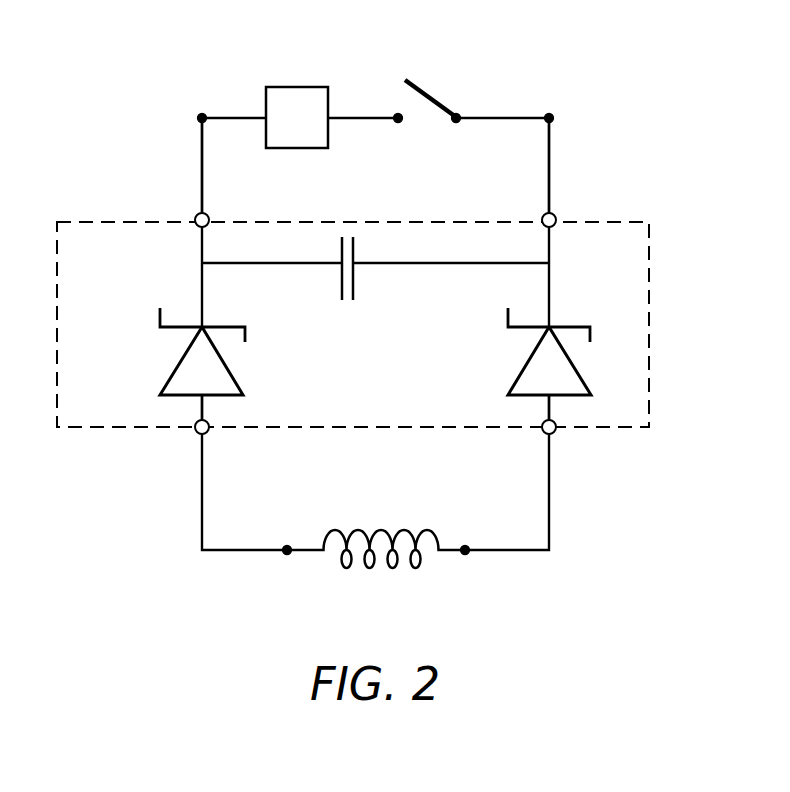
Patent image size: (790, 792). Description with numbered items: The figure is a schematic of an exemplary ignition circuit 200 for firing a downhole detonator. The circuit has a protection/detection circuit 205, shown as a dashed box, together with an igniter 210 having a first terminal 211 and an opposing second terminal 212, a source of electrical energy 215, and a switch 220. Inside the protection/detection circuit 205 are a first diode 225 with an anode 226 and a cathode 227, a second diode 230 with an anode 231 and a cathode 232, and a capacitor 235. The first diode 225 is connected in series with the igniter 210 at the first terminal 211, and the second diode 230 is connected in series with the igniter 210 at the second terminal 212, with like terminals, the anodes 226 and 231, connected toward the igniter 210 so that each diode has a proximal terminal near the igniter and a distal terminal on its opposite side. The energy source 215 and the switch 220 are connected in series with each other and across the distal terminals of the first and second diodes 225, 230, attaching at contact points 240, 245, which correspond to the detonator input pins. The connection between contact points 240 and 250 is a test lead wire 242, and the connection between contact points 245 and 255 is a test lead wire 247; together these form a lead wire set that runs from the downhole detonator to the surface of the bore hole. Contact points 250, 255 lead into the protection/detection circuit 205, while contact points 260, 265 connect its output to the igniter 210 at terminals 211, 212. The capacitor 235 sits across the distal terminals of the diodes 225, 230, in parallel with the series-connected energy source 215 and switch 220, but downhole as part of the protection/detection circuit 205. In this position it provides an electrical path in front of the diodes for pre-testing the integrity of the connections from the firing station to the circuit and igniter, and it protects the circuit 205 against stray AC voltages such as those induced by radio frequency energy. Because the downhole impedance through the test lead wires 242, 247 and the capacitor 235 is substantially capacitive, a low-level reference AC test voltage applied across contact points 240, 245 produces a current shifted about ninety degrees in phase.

The ignition circuit 200 is at (582, 519).
The protection/detection circuit 205 is at (650, 300).
The igniter 210 is at (368, 570).
The first terminal 211 is at (283, 556).
The second terminal 212 is at (467, 555).
The source of electrical energy 215 is at (297, 87).
The switch 220 is at (434, 97).
The first diode 225 is at (196, 352).
The anode 226 is at (205, 400).
The cathode 227 is at (248, 335).
The second diode 230 is at (514, 350).
The anode 231 is at (545, 410).
The cathode 232 is at (508, 318).
The capacitor 235 is at (355, 273).
The contact point 240 is at (202, 120).
The test lead wire 242 is at (205, 170).
The contact point 245 is at (553, 116).
The test lead wire 247 is at (547, 157).
The contact point 250 is at (198, 213).
The contact point 255 is at (552, 213).
The contact point 260 is at (195, 437).
The contact point 265 is at (556, 433).